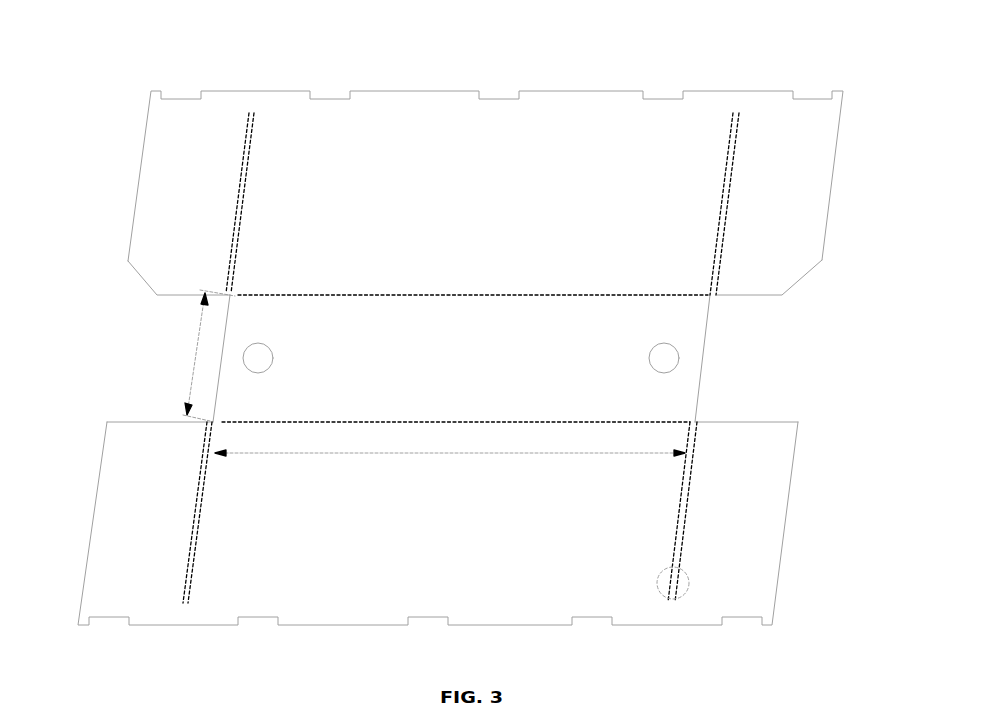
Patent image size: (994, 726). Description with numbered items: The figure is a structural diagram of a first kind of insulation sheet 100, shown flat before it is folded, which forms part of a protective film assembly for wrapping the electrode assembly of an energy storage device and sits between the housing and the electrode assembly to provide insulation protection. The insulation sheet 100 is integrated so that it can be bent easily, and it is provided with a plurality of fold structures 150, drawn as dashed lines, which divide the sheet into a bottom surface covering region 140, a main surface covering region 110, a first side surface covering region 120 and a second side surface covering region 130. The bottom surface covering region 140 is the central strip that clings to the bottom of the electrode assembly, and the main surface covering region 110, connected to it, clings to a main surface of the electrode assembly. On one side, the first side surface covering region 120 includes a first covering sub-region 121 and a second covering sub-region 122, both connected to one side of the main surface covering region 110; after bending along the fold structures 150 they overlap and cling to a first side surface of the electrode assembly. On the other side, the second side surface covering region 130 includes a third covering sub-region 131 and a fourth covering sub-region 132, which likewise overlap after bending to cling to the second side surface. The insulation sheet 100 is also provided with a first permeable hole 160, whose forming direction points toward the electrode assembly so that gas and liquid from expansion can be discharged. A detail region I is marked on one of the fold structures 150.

The insulation sheet 100 is at (245, 68).
The main surface covering region 110 is at (593, 127).
The first side surface covering region 120 is at (68, 312).
The first covering sub-region 121 is at (165, 278).
The second covering sub-region 122 is at (130, 433).
The second side surface covering region 130 is at (878, 320).
The third covering sub-region 131 is at (777, 263).
The fourth covering sub-region 132 is at (752, 452).
The bottom surface covering region 140 is at (680, 390).
The fold structures 150 is at (243, 195).
The first permeable hole 160 is at (664, 358).
The detail region I is at (662, 572).